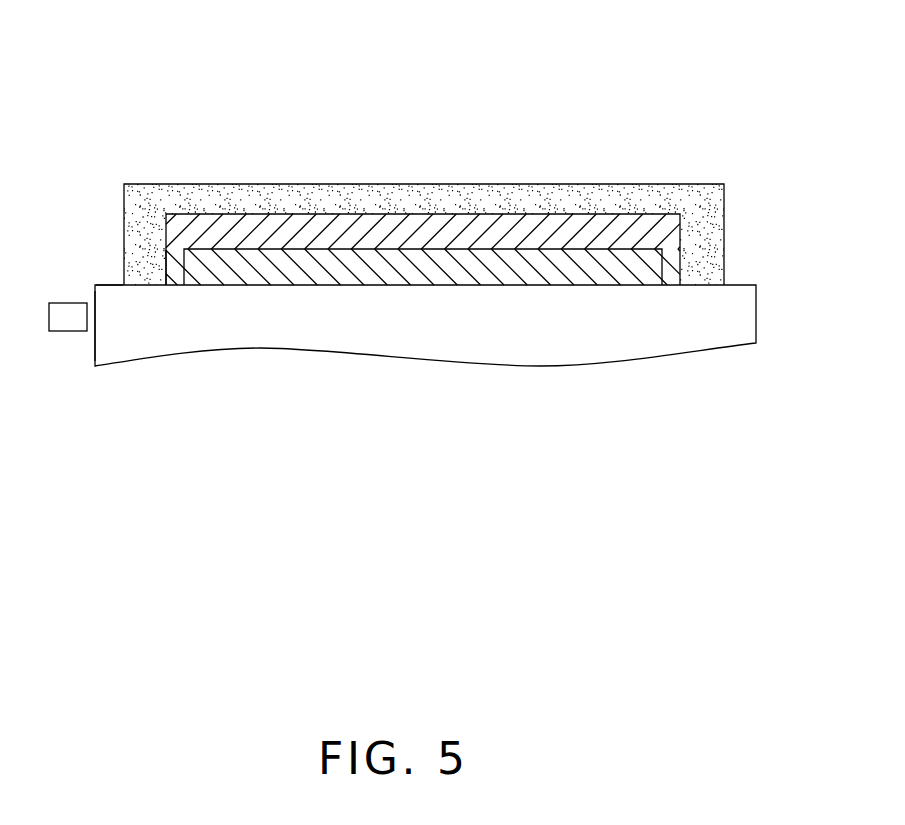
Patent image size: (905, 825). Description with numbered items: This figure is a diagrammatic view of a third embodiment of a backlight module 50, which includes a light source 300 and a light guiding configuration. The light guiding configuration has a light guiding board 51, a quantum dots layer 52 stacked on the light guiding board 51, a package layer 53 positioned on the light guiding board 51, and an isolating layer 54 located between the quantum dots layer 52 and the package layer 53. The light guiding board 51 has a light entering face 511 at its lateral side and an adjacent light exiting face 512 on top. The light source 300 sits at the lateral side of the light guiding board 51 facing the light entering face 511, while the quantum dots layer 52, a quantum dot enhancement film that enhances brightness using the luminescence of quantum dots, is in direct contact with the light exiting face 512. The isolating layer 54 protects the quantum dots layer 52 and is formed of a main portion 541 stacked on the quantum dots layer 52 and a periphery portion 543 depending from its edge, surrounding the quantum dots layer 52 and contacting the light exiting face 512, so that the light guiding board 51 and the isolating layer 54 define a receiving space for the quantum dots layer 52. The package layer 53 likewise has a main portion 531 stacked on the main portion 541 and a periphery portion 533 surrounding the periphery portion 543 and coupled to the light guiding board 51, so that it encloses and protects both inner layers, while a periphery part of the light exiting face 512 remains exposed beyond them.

The backlight module 50 is at (348, 45).
The light guiding board 51 is at (756, 316).
The light entering face 511 is at (94, 293).
The light exiting face 512 is at (110, 284).
The quantum dots layer 52 is at (668, 272).
The package layer 53 is at (588, 183).
The main portion of package layer 531 is at (435, 192).
The periphery portion of package layer 533 is at (713, 233).
The isolating layer 54 is at (680, 220).
The main portion of isolating layer 541 is at (246, 232).
The periphery portion of isolating layer 543 is at (176, 268).
The light source 300 is at (65, 332).